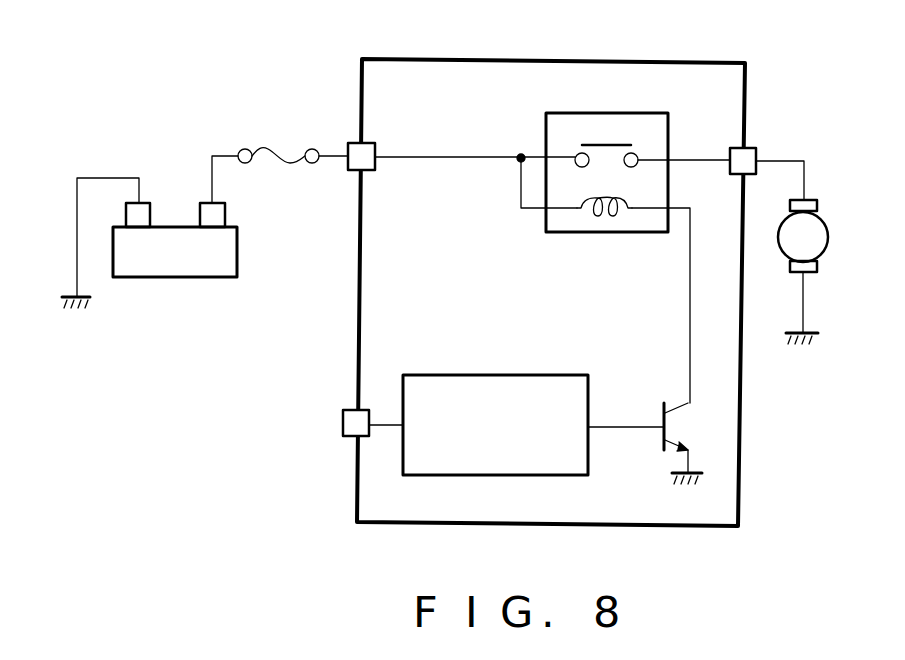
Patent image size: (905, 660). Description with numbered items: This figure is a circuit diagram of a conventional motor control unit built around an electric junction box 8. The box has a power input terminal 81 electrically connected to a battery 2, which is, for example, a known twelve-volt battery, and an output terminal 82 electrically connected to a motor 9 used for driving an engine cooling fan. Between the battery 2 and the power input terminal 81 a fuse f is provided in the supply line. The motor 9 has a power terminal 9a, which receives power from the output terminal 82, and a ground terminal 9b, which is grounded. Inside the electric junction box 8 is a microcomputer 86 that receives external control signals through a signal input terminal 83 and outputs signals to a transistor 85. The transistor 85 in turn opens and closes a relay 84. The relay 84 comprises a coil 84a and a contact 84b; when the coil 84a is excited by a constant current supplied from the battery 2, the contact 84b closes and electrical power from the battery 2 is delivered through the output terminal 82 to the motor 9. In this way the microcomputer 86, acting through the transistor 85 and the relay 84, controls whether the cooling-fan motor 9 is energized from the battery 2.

The electric junction box 8 is at (695, 62).
The battery 2 is at (175, 280).
The fuse f is at (283, 145).
The power input terminal 81 is at (357, 143).
The output terminal 82 is at (758, 153).
The signal input terminal 83 is at (348, 437).
The relay 84 is at (575, 175).
The coil 84a is at (613, 220).
The contact 84b is at (600, 145).
The transistor 85 is at (658, 415).
The microcomputer 86 is at (518, 373).
The motor 9 is at (830, 249).
The power terminal 9a is at (807, 197).
The ground terminal 9b is at (817, 266).